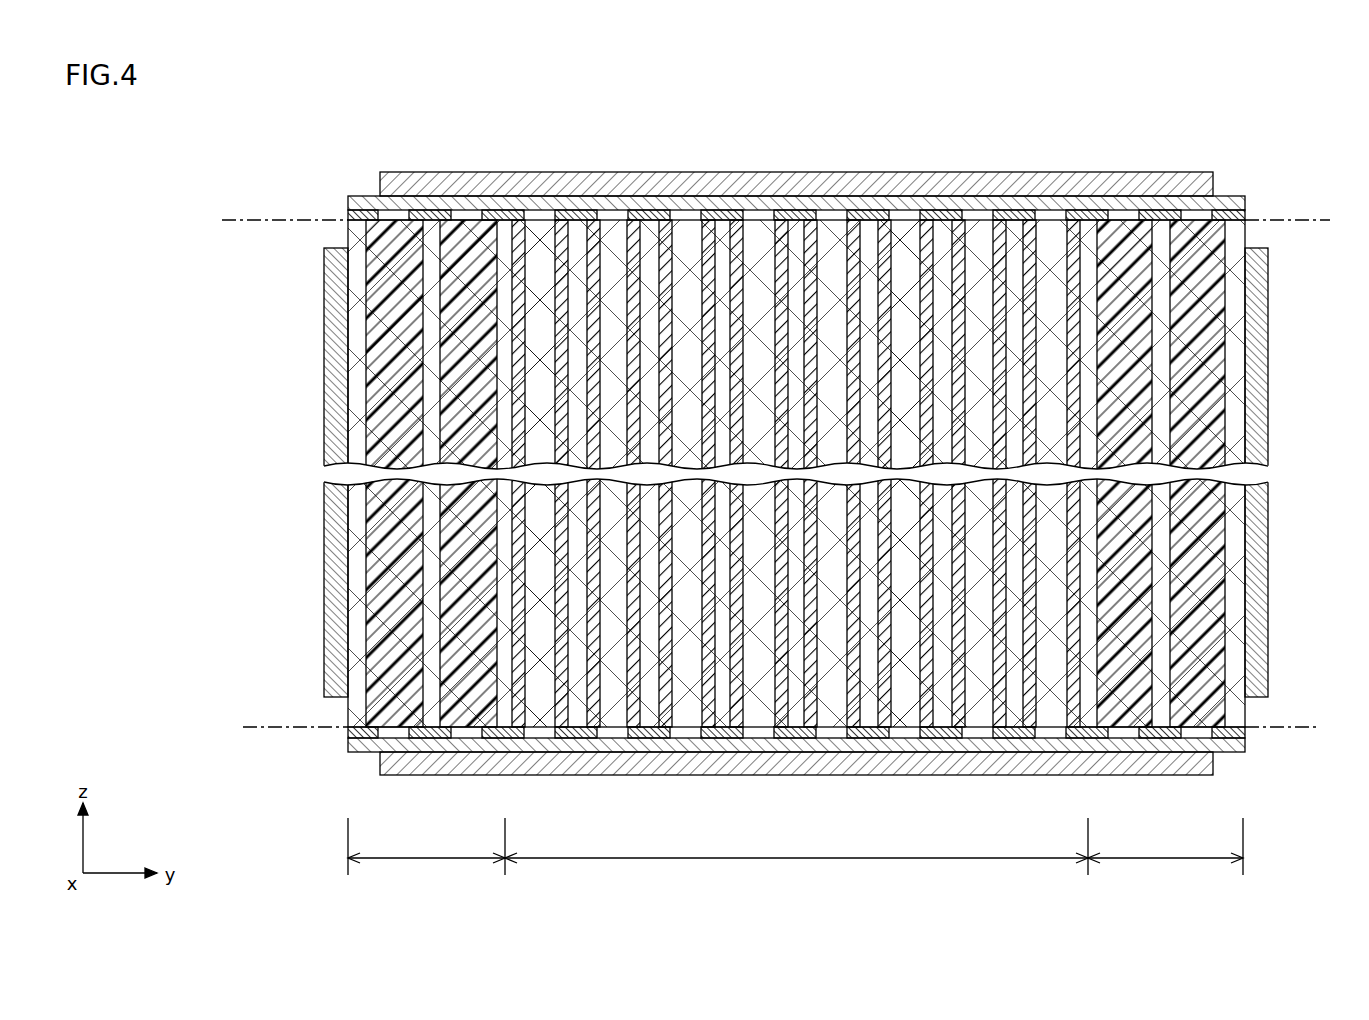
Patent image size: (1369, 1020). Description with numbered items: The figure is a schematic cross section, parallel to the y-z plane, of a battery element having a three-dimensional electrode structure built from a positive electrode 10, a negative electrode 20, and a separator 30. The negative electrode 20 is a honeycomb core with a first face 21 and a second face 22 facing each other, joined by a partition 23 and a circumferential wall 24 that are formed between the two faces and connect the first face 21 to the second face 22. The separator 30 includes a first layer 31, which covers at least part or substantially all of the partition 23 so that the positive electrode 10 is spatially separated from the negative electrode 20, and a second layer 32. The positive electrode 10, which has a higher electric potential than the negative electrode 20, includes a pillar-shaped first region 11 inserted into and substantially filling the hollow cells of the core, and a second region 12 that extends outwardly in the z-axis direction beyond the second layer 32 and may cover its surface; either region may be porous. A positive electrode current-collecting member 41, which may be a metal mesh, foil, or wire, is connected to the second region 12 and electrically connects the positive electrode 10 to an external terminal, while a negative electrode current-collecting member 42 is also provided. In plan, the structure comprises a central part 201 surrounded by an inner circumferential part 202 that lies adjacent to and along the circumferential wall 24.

The positive electrode 10 is at (563, 402).
The first region 11 is at (538, 235).
The second region 12 is at (605, 212).
The negative electrode 20 is at (720, 525).
The first face 21 is at (278, 218).
The second face 22 is at (287, 731).
The partition 23 is at (600, 690).
The circumferential wall 24 is at (360, 412).
The separator 30 is at (890, 398).
The first layer 31 is at (900, 255).
The second layer 32 is at (875, 220).
The positive electrode current-collecting member 41 is at (758, 170).
The negative electrode current-collecting member 42 is at (322, 356).
The central part 201 is at (796, 872).
The inner circumferential part 202 is at (795, 854).